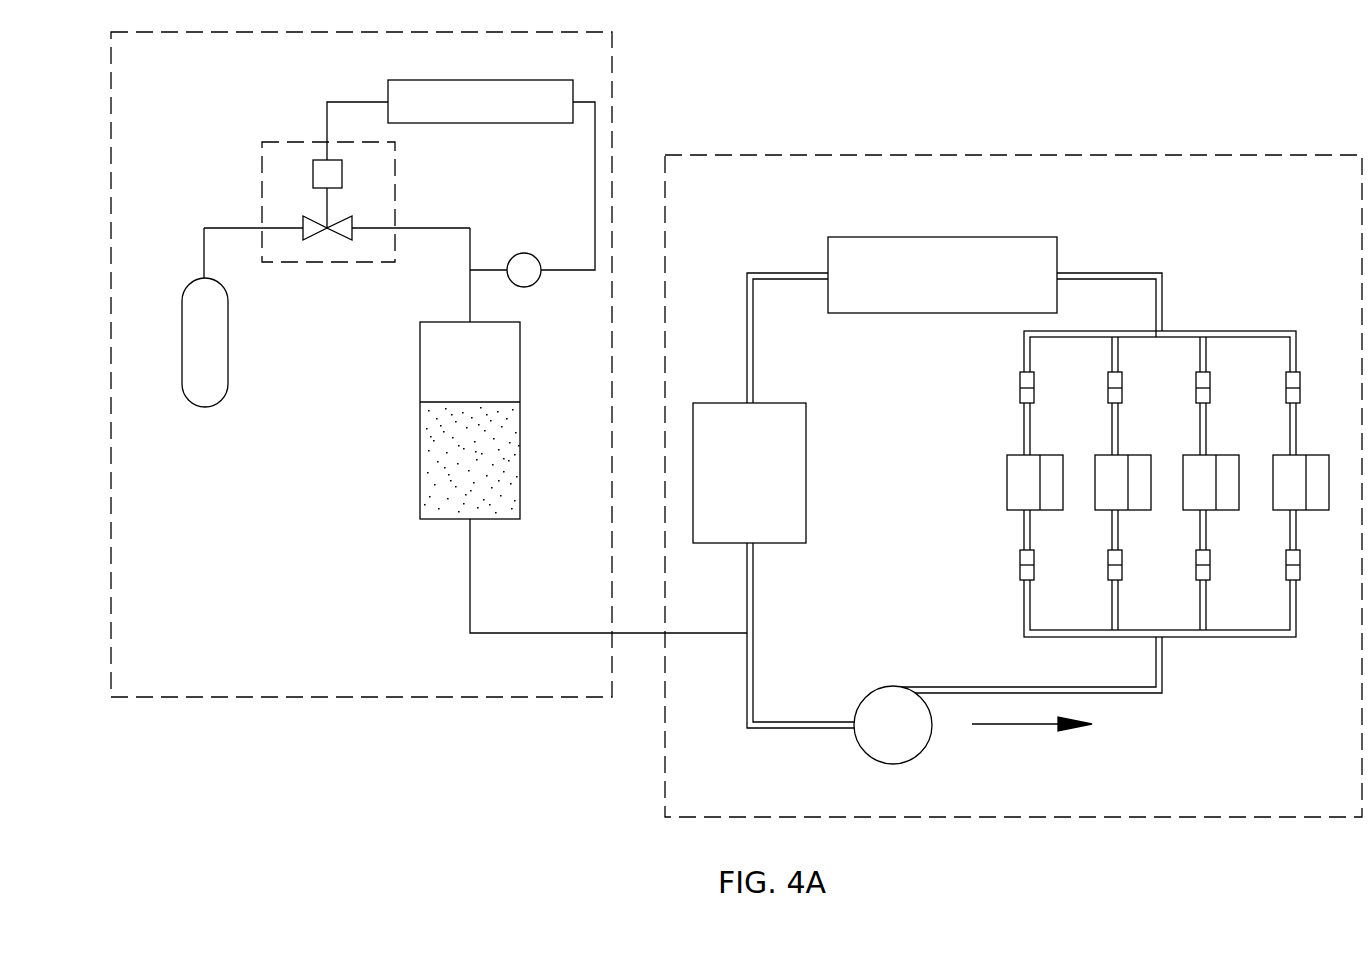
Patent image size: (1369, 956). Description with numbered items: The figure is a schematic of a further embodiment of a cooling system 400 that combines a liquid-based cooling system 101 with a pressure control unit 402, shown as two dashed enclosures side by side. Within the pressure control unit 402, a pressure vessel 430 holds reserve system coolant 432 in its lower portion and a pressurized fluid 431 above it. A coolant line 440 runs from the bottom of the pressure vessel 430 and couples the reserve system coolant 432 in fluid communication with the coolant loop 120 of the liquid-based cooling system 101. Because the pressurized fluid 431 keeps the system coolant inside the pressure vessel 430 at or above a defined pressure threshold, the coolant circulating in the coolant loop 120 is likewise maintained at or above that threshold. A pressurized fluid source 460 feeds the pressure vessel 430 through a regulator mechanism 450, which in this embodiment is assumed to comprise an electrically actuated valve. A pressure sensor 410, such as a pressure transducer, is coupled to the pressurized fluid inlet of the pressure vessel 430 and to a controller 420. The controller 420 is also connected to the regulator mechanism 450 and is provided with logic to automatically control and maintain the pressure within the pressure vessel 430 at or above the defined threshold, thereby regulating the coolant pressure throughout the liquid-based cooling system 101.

The liquid-based cooling system 101 is at (1142, 155).
The coolant loop 120 is at (755, 679).
The cooling system 400 is at (932, 79).
The pressure control unit 402 is at (612, 64).
The pressure sensor 410 is at (524, 253).
The controller 420 is at (472, 123).
The pressure vessel 430 is at (405, 374).
The pressurized fluid 431 is at (432, 355).
The reserve system coolant 432 is at (437, 484).
The coolant line 440 is at (470, 603).
The regulator mechanism 450 is at (262, 177).
The pressurized fluid source 460 is at (204, 407).